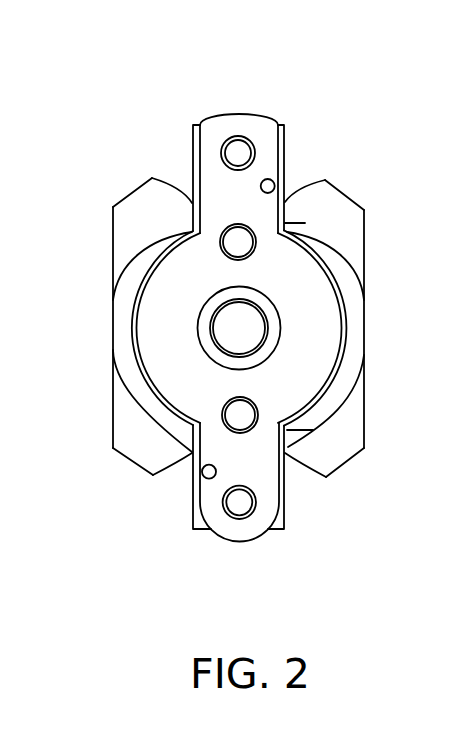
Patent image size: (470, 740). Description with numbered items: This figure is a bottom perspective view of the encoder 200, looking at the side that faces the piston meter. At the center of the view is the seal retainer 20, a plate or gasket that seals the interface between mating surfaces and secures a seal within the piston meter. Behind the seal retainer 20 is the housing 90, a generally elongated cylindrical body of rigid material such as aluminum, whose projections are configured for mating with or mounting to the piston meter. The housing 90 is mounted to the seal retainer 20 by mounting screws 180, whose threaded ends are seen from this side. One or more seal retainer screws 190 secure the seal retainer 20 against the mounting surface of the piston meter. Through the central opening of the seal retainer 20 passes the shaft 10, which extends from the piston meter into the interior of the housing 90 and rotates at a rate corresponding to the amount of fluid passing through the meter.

The encoder 200 is at (101, 89).
The shaft 10 is at (239, 328).
The seal retainer 20 is at (265, 495).
The housing 90 is at (328, 449).
The mounting screws 180 is at (238, 153).
The seal retainer screws 190 is at (238, 242).